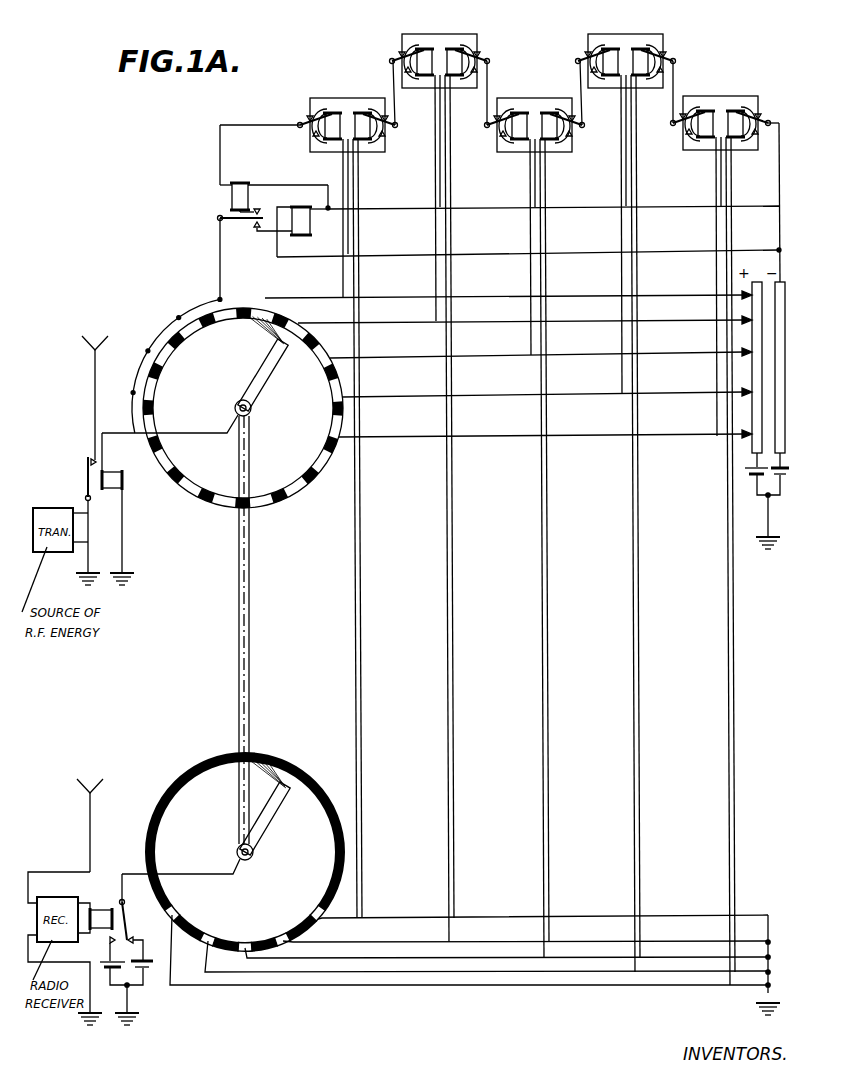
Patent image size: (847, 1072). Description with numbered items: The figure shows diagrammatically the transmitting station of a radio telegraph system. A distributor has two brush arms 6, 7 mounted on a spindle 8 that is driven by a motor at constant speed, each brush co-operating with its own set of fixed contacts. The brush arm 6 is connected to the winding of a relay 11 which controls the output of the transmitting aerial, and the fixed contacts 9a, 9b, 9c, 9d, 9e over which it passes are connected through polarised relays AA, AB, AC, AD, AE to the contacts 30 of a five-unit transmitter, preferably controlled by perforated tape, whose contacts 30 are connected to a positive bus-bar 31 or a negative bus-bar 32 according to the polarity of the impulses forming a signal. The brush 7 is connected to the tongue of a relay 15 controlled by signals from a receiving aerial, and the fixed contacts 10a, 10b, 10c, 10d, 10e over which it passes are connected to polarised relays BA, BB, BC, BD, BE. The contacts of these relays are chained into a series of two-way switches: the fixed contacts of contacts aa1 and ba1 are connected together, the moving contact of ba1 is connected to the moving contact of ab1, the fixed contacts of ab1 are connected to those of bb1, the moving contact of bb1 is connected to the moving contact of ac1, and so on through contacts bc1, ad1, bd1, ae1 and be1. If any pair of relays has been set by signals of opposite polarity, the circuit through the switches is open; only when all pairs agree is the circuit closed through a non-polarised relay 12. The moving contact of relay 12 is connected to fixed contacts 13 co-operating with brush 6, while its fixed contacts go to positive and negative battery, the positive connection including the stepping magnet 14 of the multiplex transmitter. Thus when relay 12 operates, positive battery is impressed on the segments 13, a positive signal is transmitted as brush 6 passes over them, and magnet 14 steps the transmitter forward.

The brush arm 6 is at (259, 380).
The brush arm 7 is at (268, 822).
The spindle 8 is at (250, 640).
The fixed contact 9a is at (253, 318).
The fixed contact 9b is at (302, 326).
The fixed contact 9c is at (345, 345).
The fixed contact 9d is at (341, 400).
The fixed contact 9e is at (337, 440).
The fixed contact 10a is at (312, 907).
The fixed contact 10b is at (288, 935).
The fixed contact 10c is at (250, 940).
The fixed contact 10d is at (228, 910).
The fixed contact 10e is at (213, 892).
The relay 11 is at (112, 472).
The non-polarised relay 12 is at (238, 183).
The fixed contacts (segments) 13 is at (237, 308).
The stepping magnet 14 is at (305, 235).
The relay 15 is at (100, 917).
The transmitter contacts 30 is at (748, 433).
The positive bus-bar 31 is at (750, 445).
The negative bus-bar 32 is at (800, 274).
The polarised relay AA is at (332, 142).
The polarised relay BA is at (362, 142).
The polarised relay AB is at (424, 78).
The polarised relay BB is at (454, 78).
The polarised relay AC is at (519, 142).
The polarised relay BC is at (549, 142).
The polarised relay AD is at (610, 78).
The polarised relay BD is at (640, 78).
The polarised relay AE is at (705, 140).
The polarised relay BE is at (735, 140).
The relay contacts aa1 is at (299, 122).
The relay contacts ba1 is at (394, 122).
The relay contacts ab1 is at (392, 58).
The relay contacts bb1 is at (488, 58).
The relay contacts ac1 is at (485, 126).
The relay contacts bc1 is at (582, 128).
The relay contacts ad1 is at (578, 58).
The relay contacts bd1 is at (674, 58).
The relay contacts ae1 is at (673, 125).
The relay contacts be1 is at (769, 121).